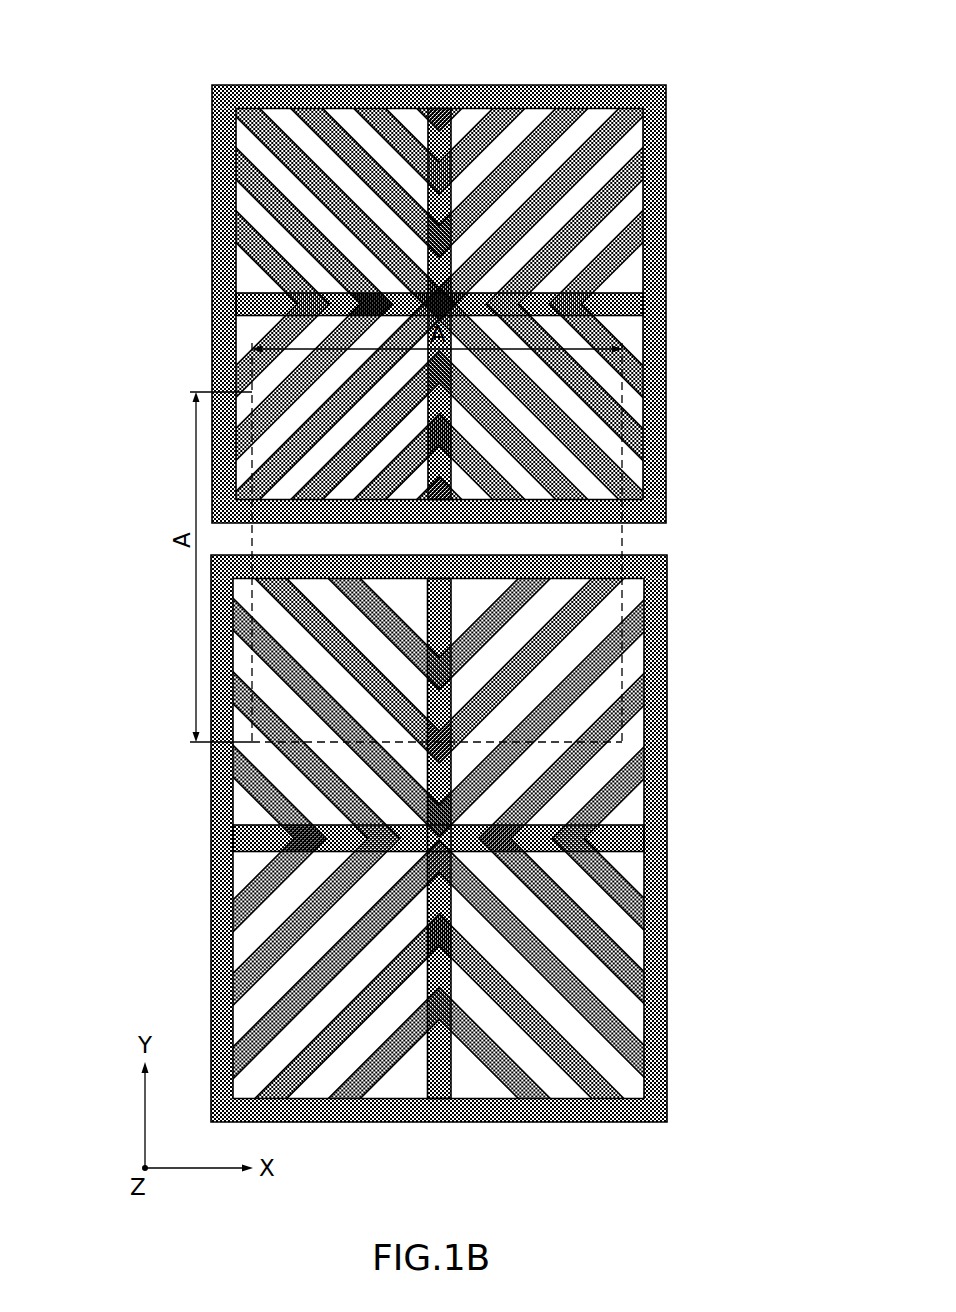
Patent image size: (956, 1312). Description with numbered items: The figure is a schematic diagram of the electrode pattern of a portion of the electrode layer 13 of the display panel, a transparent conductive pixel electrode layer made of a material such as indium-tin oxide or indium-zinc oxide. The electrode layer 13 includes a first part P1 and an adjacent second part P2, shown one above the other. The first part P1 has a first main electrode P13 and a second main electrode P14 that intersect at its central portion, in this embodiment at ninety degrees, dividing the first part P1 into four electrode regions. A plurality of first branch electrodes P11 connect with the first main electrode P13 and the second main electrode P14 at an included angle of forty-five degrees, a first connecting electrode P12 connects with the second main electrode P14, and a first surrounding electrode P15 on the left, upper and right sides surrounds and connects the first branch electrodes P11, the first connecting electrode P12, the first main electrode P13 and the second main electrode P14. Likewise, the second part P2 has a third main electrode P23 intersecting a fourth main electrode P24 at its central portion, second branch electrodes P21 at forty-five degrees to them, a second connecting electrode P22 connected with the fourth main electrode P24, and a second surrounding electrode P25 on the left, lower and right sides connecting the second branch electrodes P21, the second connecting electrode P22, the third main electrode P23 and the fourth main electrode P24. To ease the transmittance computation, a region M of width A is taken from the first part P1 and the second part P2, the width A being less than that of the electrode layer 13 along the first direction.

The electrode layer 13 is at (206, 44).
The first part P1 is at (450, 414).
The first branch electrodes P11 is at (611, 198).
The first connecting electrode P12 is at (576, 512).
The first main electrode P13 is at (634, 303).
The second main electrode P14 is at (440, 138).
The first surrounding electrode P15 is at (213, 276).
The second part P2 is at (452, 825).
The second branch electrodes P21 is at (540, 655).
The second connecting electrode P22 is at (600, 567).
The third main electrode P23 is at (641, 835).
The fourth main electrode P24 is at (437, 1066).
The second surrounding electrode P25 is at (212, 883).
The region M is at (252, 392).